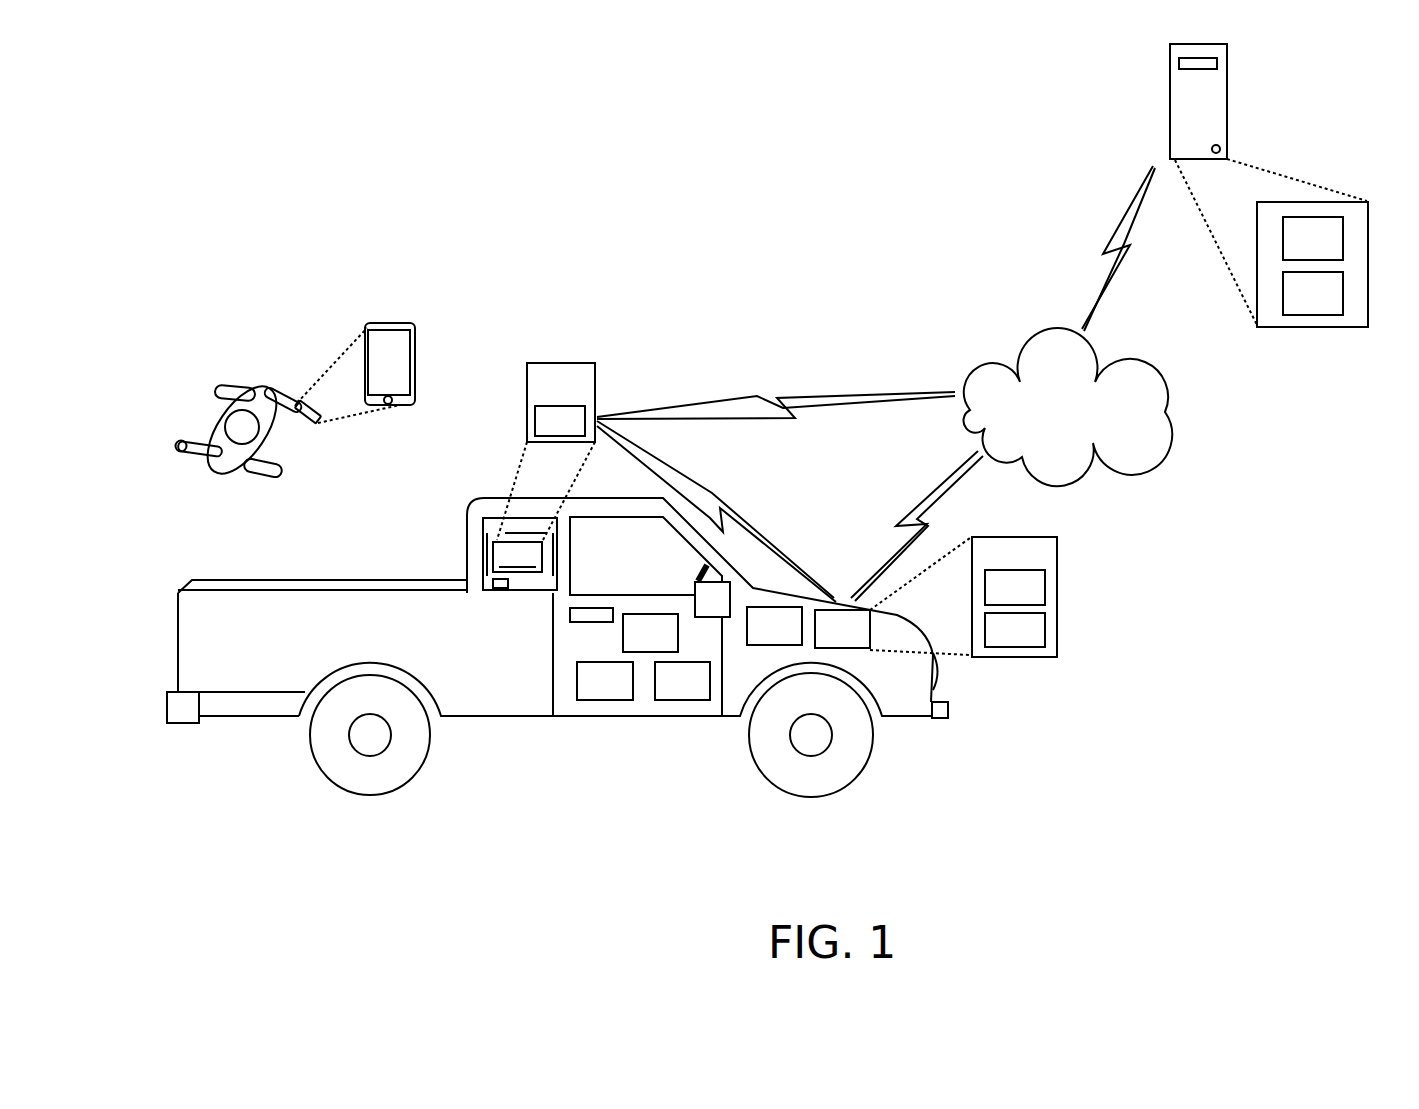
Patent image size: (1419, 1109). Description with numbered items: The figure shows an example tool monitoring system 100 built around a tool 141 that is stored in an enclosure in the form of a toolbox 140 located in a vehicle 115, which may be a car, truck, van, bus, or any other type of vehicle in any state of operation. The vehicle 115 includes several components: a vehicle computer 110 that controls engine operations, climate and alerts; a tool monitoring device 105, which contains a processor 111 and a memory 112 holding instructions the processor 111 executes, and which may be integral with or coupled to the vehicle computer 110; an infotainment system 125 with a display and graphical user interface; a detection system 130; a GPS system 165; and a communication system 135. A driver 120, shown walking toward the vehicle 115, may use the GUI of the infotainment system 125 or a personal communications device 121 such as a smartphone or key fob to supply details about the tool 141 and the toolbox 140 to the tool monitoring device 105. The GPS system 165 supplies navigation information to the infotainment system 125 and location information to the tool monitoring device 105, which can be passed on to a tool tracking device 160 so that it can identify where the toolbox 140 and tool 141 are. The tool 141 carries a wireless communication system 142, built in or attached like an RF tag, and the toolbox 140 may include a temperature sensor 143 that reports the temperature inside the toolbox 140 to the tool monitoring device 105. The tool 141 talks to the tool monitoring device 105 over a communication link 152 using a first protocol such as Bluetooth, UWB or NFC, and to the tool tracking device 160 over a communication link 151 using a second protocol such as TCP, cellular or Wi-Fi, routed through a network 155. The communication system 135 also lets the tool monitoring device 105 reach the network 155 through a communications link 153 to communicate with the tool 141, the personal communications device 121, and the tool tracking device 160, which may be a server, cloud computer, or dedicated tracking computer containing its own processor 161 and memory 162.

The tool monitoring system 100 is at (1220, 820).
The tool monitoring device 105 is at (824, 639).
The vehicle computer 110 is at (756, 636).
The processor 111 is at (996, 598).
The memory 112 is at (996, 640).
The vehicle 115 is at (491, 772).
The driver 120 is at (232, 372).
The personal communications device 121 is at (305, 424).
The infotainment system 125 is at (695, 578).
The detection system 130 is at (664, 691).
The communication system 135 is at (586, 691).
The toolbox 140 is at (532, 593).
The tool 141 is at (557, 363).
The wireless communication system 142 is at (541, 431).
The temperature sensor 143 is at (490, 580).
The communication link 151 is at (777, 392).
The communication link 152 is at (718, 500).
The communications link 153 is at (913, 502).
The network 155 is at (1146, 424).
The tool tracking device 160 is at (1148, 111).
The processor 161 is at (1313, 238).
The memory 162 is at (1313, 293).
The global positioning satellite (GPS) system 165 is at (632, 643).